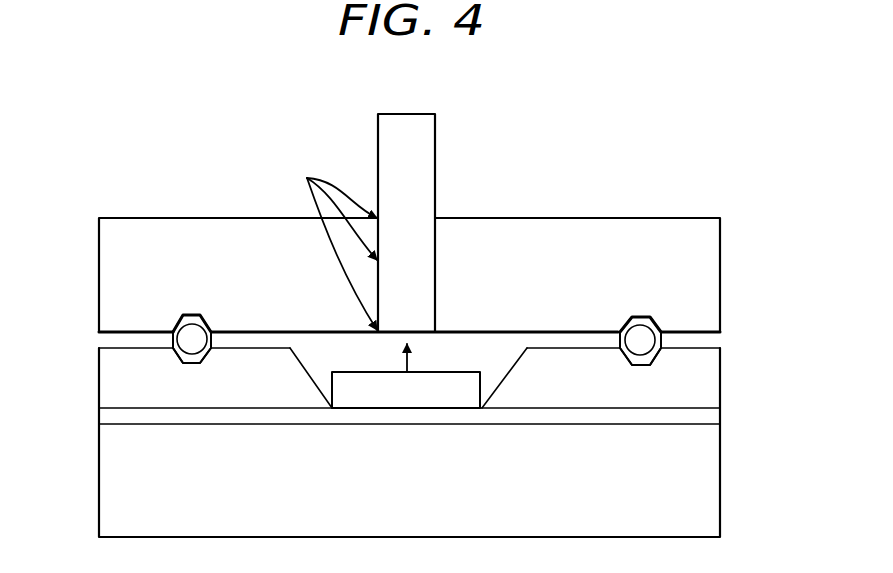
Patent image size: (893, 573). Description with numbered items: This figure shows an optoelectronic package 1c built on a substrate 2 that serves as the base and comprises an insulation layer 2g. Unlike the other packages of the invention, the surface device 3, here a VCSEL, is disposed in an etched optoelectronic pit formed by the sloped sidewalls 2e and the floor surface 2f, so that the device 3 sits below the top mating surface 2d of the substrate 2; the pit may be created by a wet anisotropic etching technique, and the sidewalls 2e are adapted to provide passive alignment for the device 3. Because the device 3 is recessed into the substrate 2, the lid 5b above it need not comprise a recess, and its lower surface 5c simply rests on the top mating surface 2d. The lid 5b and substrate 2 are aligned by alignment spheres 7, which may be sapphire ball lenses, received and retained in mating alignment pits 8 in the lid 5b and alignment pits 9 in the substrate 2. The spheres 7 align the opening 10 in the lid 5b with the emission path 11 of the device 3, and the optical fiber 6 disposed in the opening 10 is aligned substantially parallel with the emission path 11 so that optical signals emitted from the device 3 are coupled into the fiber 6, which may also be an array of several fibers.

The package 1c is at (708, 138).
The substrate 2 is at (722, 487).
The top mating surface 2d is at (108, 347).
The sidewalls of the pit 2e is at (303, 370).
The pit surface 2f is at (372, 409).
The insulation layer 2g is at (442, 425).
The surface device 3 is at (448, 372).
The lid 5b is at (722, 263).
The lid bottom surface 5c is at (302, 332).
The optical fiber 6 is at (436, 150).
The alignment spheres 7 is at (195, 338).
The alignment pit 8 is at (185, 314).
The alignment pit 9 is at (177, 357).
The opening 10 is at (329, 245).
The emission path 11 is at (400, 368).